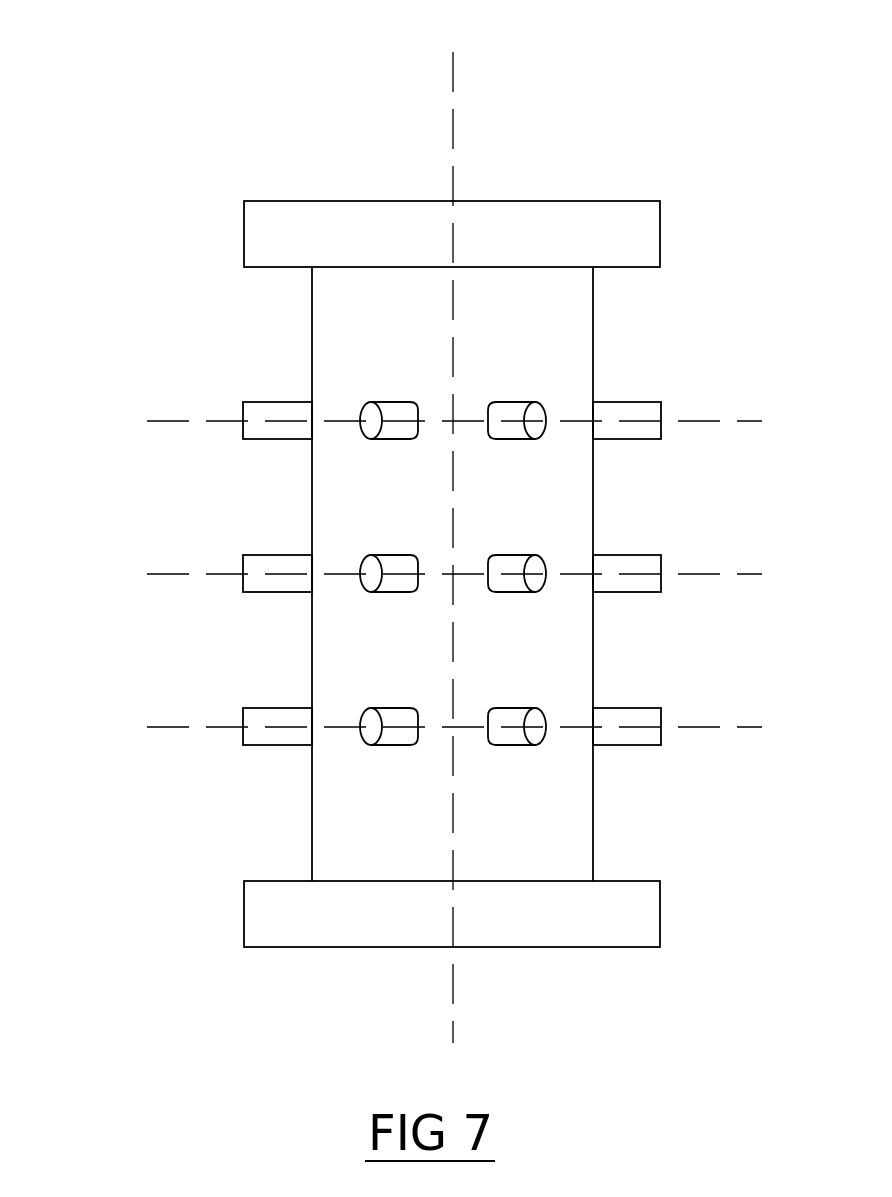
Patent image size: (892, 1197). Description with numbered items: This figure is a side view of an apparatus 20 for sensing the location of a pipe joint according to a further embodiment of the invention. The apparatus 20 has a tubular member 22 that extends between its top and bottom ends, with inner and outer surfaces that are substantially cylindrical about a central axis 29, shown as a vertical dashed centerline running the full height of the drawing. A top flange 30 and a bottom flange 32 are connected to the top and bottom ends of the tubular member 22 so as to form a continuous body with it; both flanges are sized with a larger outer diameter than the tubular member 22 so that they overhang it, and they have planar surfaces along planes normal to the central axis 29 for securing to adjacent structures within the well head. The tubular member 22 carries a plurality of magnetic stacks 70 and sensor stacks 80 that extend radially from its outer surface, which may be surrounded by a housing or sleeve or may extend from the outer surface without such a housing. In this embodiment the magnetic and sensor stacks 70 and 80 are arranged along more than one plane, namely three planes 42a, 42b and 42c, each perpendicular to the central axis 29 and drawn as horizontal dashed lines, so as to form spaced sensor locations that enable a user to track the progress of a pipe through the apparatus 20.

The apparatus 20 is at (562, 132).
The tubular member 22 is at (593, 323).
The central axis 29 is at (453, 63).
The top flange 30 is at (660, 208).
The bottom flange 32 is at (660, 902).
The plane 42a is at (149, 420).
The plane 42b is at (149, 573).
The plane 42c is at (149, 726).
The magnetic stack 70 is at (393, 402).
The sensor stack 80 is at (246, 402).